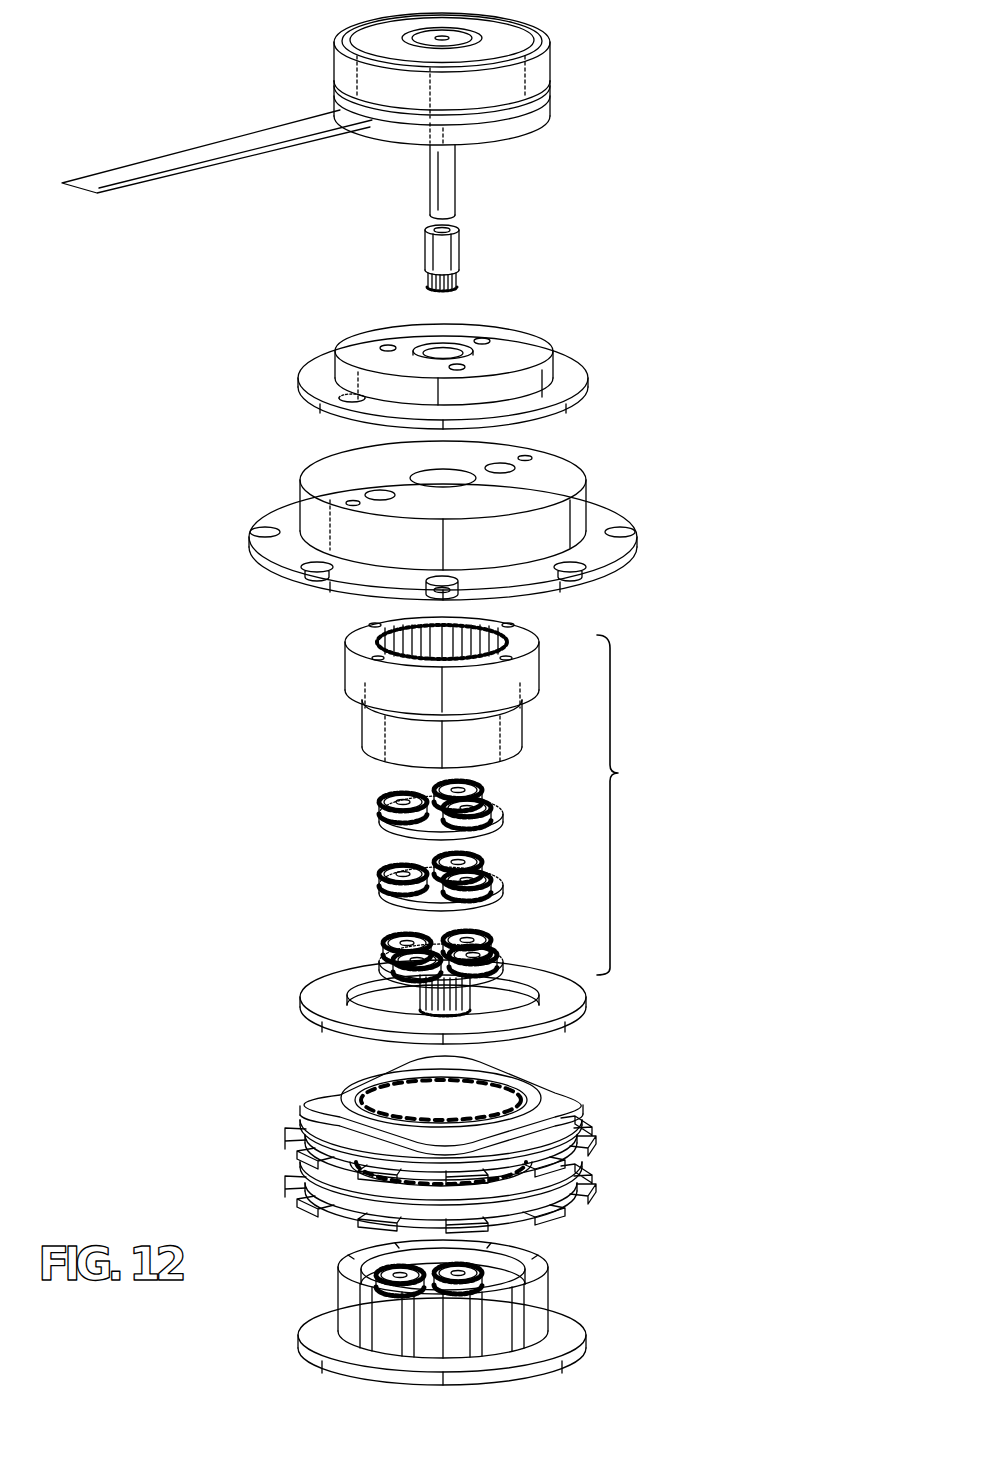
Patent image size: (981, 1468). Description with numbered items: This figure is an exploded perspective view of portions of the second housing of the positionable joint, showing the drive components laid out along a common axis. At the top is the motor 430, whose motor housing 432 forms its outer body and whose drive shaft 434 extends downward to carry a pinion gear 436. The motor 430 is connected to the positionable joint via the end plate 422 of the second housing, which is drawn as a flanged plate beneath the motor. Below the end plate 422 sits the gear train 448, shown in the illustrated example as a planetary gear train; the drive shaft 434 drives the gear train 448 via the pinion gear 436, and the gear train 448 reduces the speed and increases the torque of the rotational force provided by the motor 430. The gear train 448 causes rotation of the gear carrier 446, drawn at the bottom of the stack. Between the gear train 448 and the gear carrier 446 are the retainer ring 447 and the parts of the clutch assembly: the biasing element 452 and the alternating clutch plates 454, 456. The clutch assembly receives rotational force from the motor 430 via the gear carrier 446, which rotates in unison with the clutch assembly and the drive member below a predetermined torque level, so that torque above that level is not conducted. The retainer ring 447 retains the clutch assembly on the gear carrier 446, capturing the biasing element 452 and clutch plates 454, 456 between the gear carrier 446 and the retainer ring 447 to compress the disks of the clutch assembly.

The motor 430 is at (306, 103).
The motor housing 432 is at (547, 87).
The drive shaft 434 is at (448, 180).
The pinion gear 436 is at (430, 247).
The end plate 422 is at (610, 567).
The gear train 448 is at (504, 816).
The retainer ring 447 is at (585, 992).
The biasing element 452 is at (332, 1092).
The clutch plate 454 is at (578, 1117).
The clutch plate 456 is at (593, 1152).
The gear carrier 446 is at (590, 1343).